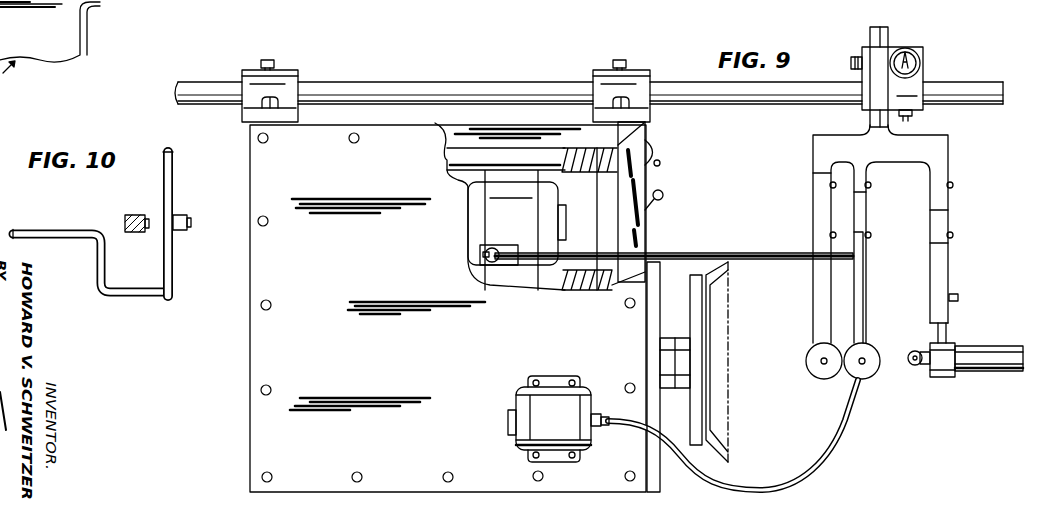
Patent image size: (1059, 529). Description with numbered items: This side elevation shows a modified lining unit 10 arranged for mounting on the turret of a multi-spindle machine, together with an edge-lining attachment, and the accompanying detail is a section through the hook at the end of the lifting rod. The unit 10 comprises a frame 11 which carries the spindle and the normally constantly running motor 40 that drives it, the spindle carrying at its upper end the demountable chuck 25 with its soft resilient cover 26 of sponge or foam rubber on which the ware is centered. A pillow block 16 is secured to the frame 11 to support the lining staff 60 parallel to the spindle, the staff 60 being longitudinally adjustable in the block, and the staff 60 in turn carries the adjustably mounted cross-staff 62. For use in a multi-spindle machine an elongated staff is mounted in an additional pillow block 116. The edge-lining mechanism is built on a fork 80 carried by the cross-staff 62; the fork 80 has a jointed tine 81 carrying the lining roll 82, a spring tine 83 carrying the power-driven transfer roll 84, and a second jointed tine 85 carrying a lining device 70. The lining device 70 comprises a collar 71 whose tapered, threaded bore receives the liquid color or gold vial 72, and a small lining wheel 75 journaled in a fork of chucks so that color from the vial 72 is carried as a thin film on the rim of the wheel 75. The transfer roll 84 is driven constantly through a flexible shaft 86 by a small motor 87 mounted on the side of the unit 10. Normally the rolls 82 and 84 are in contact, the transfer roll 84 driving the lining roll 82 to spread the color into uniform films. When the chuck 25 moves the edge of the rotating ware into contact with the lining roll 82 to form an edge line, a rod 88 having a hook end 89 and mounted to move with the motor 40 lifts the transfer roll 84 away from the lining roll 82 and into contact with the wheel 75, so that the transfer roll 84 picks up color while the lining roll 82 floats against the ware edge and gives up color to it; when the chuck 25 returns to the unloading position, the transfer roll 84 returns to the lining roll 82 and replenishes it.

In FIG. 9, the unit 10 is at (247, 326).
In FIG. 9, the frame 11 is at (640, 232).
In FIG. 9, the pillow block 16 is at (638, 70).
In FIG. 9, the chuck 25 is at (695, 446).
In FIG. 9, the cover 26 is at (704, 422).
In FIG. 9, the motor 40 is at (557, 197).
In FIG. 9, the lining staff 60 is at (994, 80).
In FIG. 9, the cross-staff 62 is at (920, 60).
In FIG. 9, the lining device 70 is at (970, 359).
In FIG. 9, the collar 71 is at (940, 377).
In FIG. 9, the vial 72 is at (1015, 360).
In FIG. 9, the lining wheel 75 is at (914, 365).
In FIG. 9, the fork 80 is at (944, 136).
In FIG. 9, the jointed tine 81 is at (812, 191).
In FIG. 10, the jointed tine 81 is at (145, 211).
In FIG. 9, the lining roll 82 is at (810, 350).
In FIG. 9, the spring tine 83 is at (869, 178).
In FIG. 10, the spring tine 83 is at (181, 216).
In FIG. 9, the transfer roll 84 is at (872, 350).
In FIG. 9, the jointed tine 85 is at (950, 178).
In FIG. 9, the flexible shaft 86 is at (848, 424).
In FIG. 9, the motor 87 is at (514, 405).
In FIG. 9, the rod 88 is at (691, 256).
In FIG. 10, the rod 88 is at (72, 233).
In FIG. 10, the hook end 89 is at (176, 166).
In FIG. 9, the pillow block 116 is at (288, 70).